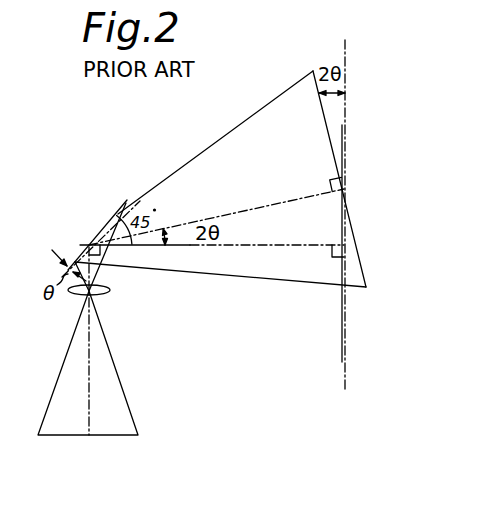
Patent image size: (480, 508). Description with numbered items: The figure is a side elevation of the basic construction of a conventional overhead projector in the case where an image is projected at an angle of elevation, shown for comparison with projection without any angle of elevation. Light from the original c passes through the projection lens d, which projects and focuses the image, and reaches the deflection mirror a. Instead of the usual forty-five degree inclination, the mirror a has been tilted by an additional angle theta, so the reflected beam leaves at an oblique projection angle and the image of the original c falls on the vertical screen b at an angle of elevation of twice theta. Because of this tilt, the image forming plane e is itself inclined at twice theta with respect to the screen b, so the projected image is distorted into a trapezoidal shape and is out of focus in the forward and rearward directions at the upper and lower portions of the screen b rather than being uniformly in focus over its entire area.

The deflection mirror a is at (129, 199).
The vertical screen b is at (345, 50).
The original c is at (115, 435).
The projection lens d is at (109, 292).
The image forming plane e is at (328, 133).